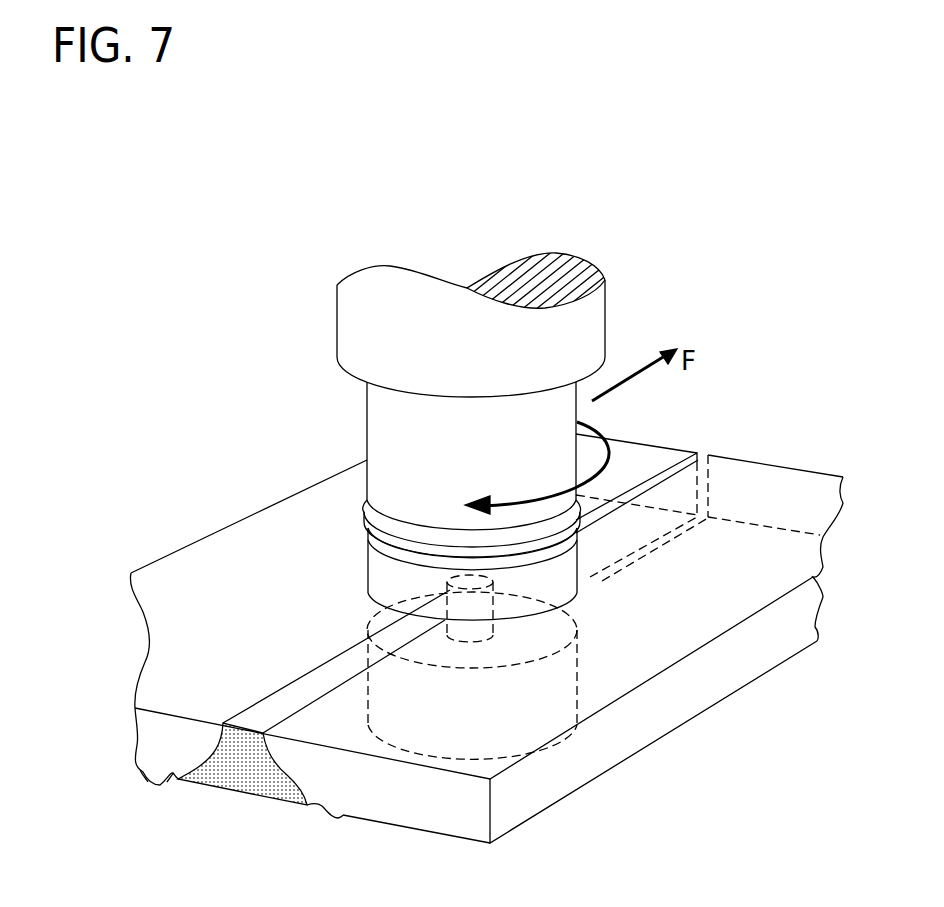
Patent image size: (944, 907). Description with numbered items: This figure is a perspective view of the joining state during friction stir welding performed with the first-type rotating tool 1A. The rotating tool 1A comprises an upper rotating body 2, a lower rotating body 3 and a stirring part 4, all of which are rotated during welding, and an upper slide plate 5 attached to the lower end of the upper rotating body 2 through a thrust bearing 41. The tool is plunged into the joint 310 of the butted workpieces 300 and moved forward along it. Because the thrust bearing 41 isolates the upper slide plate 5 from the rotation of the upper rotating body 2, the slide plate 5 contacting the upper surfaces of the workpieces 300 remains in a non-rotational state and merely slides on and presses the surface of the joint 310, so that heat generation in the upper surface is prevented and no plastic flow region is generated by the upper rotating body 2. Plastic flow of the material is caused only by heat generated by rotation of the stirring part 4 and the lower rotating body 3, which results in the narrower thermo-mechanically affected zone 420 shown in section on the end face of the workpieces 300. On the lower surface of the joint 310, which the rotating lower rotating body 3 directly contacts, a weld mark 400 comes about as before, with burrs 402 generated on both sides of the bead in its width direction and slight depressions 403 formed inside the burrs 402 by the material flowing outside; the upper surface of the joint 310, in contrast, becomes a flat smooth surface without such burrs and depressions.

The rotating tool 1A is at (313, 266).
The upper rotating body 2 is at (383, 437).
The lower rotating body 3 is at (568, 703).
The stirring part 4 is at (555, 602).
The upper slide plate 5 is at (362, 572).
The thrust bearing 41 is at (360, 540).
The workpieces 300 is at (258, 532).
The joint 310 is at (650, 472).
The weld mark 400 is at (297, 806).
The burrs 402 is at (147, 777).
The depressions 403 is at (173, 776).
The thermo-mechanically affected zone 420 is at (243, 765).